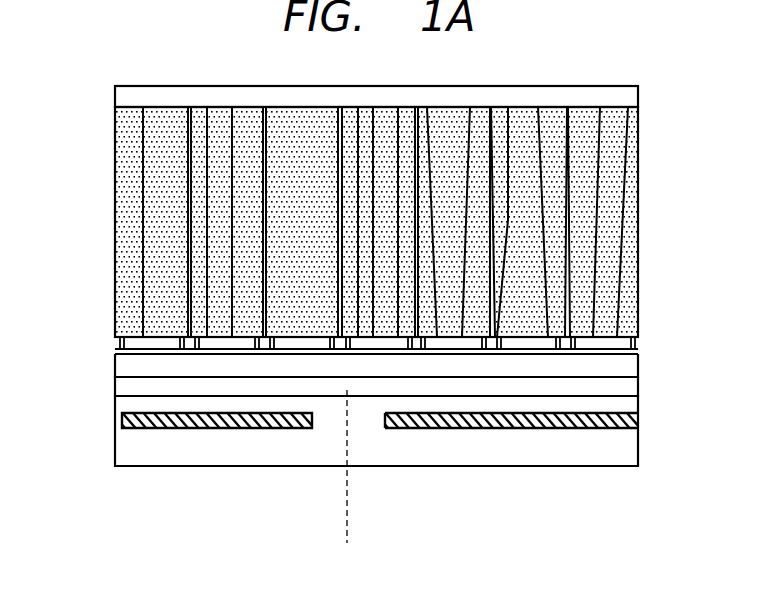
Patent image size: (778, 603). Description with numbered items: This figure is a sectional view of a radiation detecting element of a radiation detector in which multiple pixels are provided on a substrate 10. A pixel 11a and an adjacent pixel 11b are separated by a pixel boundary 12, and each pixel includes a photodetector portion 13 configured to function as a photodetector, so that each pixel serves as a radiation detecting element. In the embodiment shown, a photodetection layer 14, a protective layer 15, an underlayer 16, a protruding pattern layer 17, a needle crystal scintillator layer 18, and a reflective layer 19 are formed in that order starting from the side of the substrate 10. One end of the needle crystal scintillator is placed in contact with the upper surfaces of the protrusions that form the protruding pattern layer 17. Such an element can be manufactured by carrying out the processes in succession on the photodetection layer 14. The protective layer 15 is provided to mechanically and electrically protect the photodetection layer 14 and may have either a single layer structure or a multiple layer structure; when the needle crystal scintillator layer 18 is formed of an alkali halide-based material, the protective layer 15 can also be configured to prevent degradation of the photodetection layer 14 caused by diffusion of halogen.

The substrate 10 is at (630, 447).
The pixel 11a is at (343, 485).
The pixel 11b is at (638, 485).
The pixel boundary 12 is at (349, 525).
The photodetector portion 13 is at (122, 424).
The photodetection layer 14 is at (656, 393).
The protective layer 15 is at (628, 385).
The underlayer 16 is at (628, 368).
The protruding pattern layer 17 is at (651, 337).
The needle crystal scintillator layer 18 is at (650, 107).
The reflective layer 19 is at (640, 90).